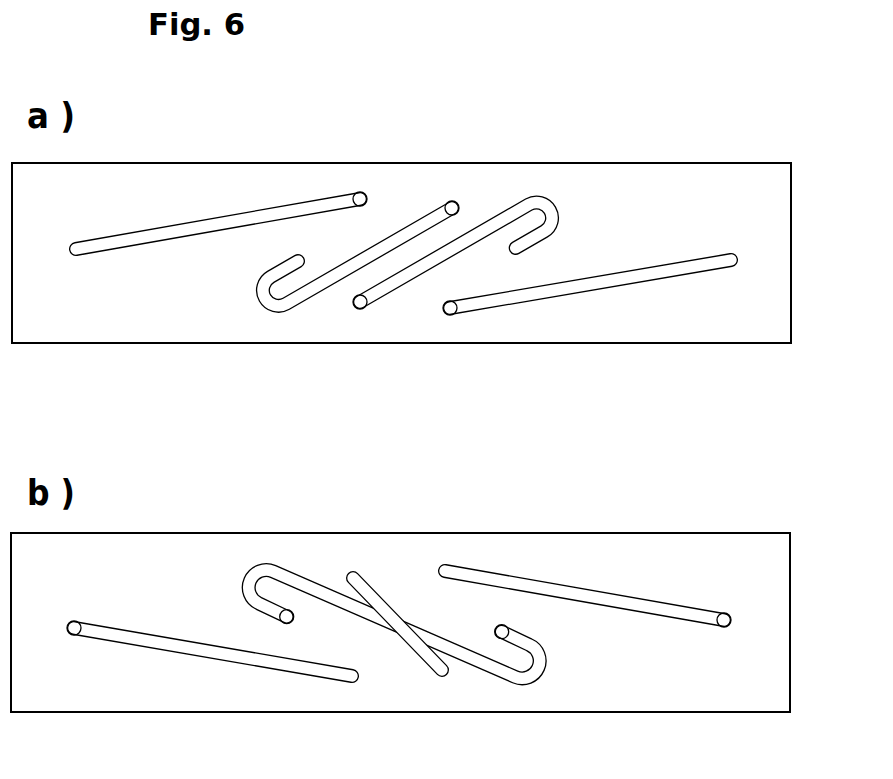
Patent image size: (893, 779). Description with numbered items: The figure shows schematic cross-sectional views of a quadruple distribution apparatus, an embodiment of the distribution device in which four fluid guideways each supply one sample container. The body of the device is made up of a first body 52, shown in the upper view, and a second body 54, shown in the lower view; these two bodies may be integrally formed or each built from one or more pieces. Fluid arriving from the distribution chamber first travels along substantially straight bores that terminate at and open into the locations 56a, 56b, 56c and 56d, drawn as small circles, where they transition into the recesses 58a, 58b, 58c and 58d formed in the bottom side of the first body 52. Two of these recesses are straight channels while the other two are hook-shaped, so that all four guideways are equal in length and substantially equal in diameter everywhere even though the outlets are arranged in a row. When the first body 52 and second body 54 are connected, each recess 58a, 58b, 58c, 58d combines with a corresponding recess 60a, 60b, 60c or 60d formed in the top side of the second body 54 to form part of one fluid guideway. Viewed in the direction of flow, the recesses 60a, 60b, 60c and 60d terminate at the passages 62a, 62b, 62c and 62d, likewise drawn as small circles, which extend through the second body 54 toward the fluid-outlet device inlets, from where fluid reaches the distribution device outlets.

The first body 52 is at (738, 163).
The second body 54 is at (708, 533).
The location 56a is at (356, 194).
The location 56b is at (452, 202).
The location 56c is at (362, 306).
The location 56d is at (452, 311).
The recess 58a is at (172, 233).
The recess 58b is at (383, 247).
The recess 58c is at (486, 228).
The recess 58d is at (608, 276).
The recess 60a is at (160, 640).
The recess 60b is at (320, 597).
The recess 60c is at (406, 606).
The recess 60d is at (603, 600).
The passage 62a is at (76, 632).
The passage 62b is at (289, 622).
The passage 62c is at (506, 628).
The passage 62d is at (724, 616).